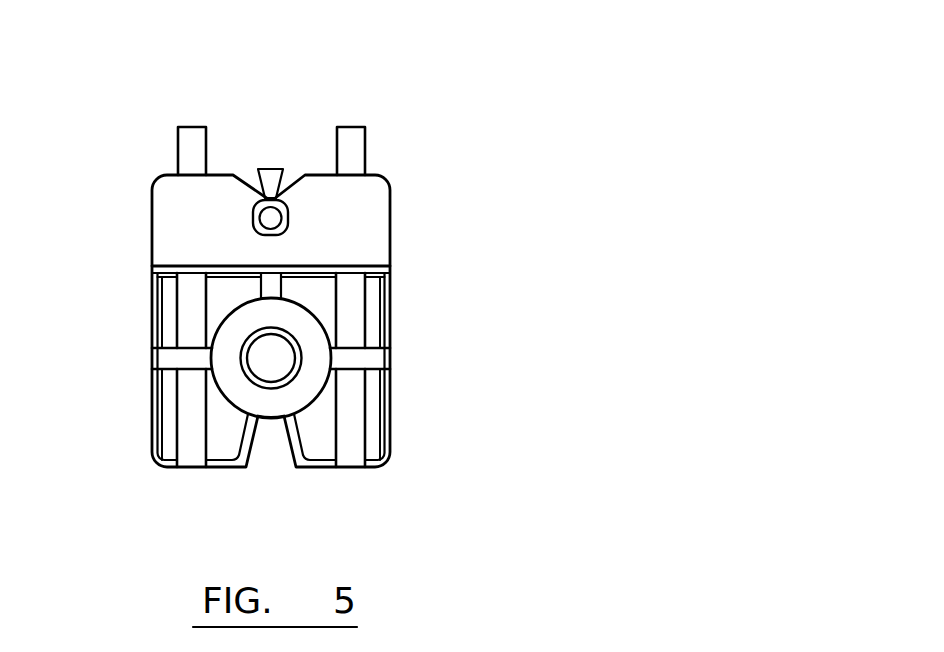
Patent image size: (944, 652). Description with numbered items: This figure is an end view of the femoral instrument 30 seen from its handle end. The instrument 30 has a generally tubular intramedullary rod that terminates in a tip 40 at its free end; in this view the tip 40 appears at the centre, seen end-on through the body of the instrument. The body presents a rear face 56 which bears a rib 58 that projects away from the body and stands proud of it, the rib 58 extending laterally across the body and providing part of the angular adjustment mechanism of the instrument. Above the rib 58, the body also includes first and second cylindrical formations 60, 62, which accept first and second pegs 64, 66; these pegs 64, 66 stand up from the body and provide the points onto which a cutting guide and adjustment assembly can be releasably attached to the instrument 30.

The instrument 30 is at (430, 80).
The tip 40 is at (272, 357).
The rear face 56 is at (167, 323).
The rib 58 is at (167, 357).
The first cylindrical formation 60 is at (177, 296).
The second cylindrical formation 62 is at (367, 312).
The first peg 64 is at (190, 149).
The second peg 66 is at (352, 153).